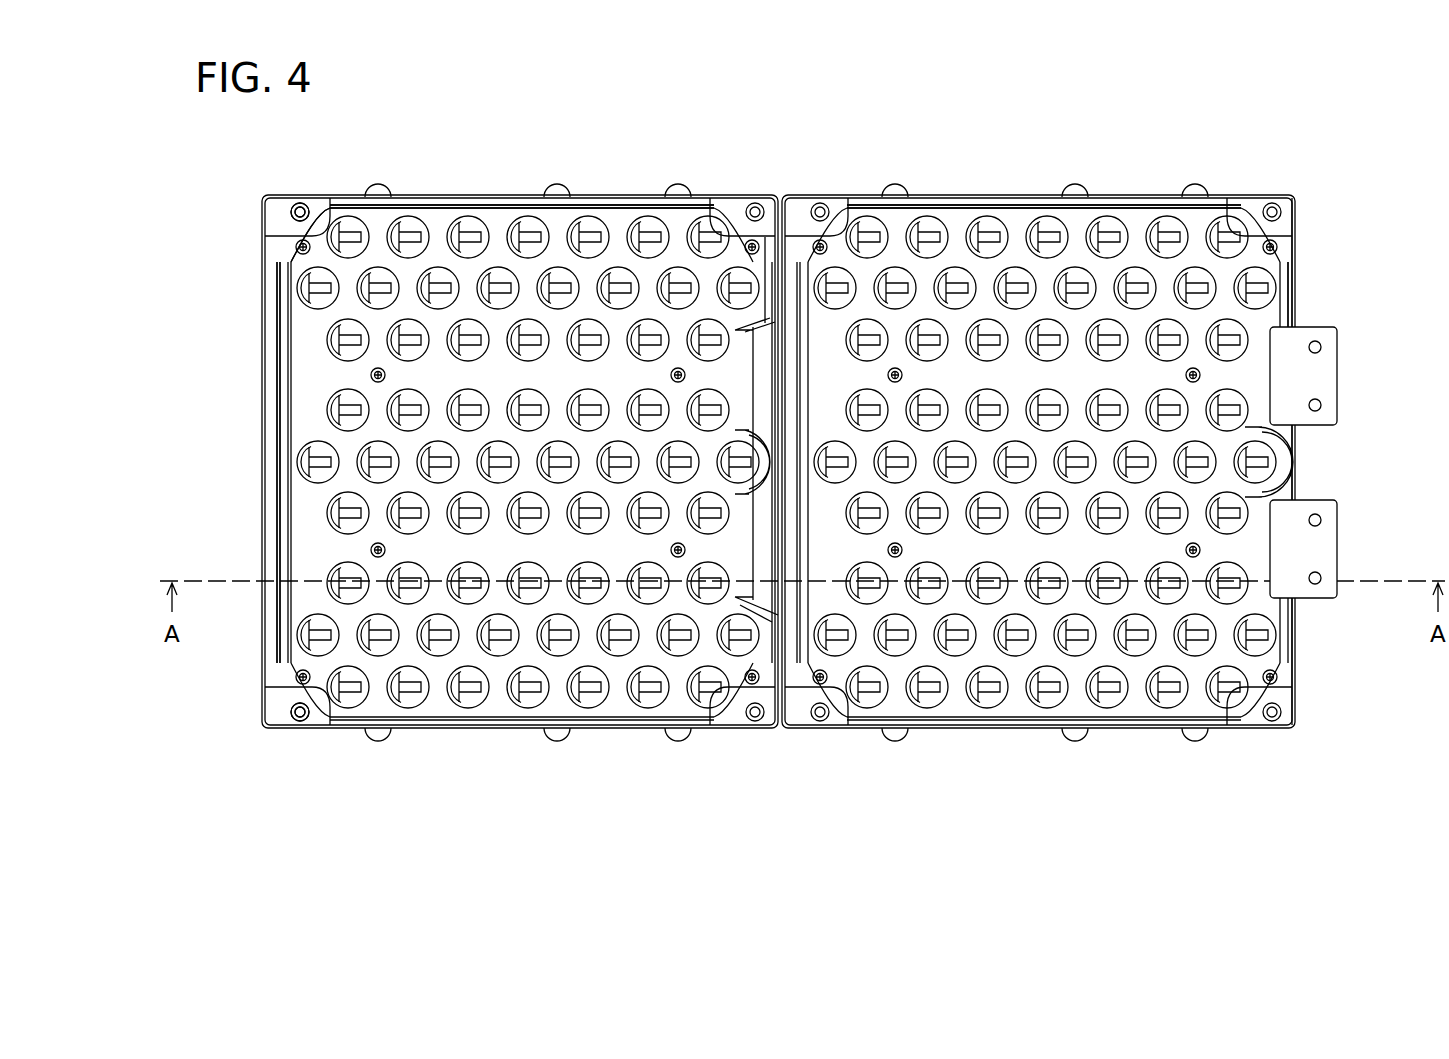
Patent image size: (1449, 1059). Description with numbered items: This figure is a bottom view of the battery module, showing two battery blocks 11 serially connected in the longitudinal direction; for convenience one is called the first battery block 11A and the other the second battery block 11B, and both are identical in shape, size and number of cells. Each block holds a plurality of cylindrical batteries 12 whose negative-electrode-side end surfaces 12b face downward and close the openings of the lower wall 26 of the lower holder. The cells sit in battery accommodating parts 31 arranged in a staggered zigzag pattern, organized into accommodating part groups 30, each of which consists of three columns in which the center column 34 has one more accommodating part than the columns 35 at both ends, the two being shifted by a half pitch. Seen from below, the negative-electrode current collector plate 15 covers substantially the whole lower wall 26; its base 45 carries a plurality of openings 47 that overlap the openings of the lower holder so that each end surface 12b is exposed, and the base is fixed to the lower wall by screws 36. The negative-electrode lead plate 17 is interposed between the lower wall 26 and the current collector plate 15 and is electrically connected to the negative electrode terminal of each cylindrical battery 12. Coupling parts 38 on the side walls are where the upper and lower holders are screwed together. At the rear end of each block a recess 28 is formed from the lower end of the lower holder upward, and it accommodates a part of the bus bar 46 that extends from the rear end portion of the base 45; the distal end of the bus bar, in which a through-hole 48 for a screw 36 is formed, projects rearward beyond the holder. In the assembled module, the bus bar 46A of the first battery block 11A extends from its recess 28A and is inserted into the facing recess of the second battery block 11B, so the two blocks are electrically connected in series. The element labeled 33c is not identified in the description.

The battery block 11 is at (663, 484).
The first battery block 11A is at (663, 484).
The second battery block 11B is at (1105, 490).
The cylindrical battery 12 is at (416, 187).
The negative-electrode-side end surface 12b is at (404, 216).
The negative-electrode current collector plate 15 is at (1128, 222).
The negative-electrode lead plate 17 is at (528, 216).
The lower wall 26 is at (300, 735).
The recess 28 is at (1316, 519).
The recess of first battery block 28A is at (770, 700).
The accommodating part group 30 is at (227, 462).
The battery accommodating part 31 is at (1228, 222).
The cell holding portion 33c is at (348, 697).
The center column 34 is at (290, 462).
The column at end 35 is at (316, 518).
The screw 36 is at (1282, 246).
The coupling part 38 is at (557, 735).
The base 45 is at (302, 203).
The bus bar 46 is at (1340, 395).
The bus bar of first battery block 46A is at (765, 362).
The opening 47 is at (335, 225).
The through-hole 48 is at (1340, 343).